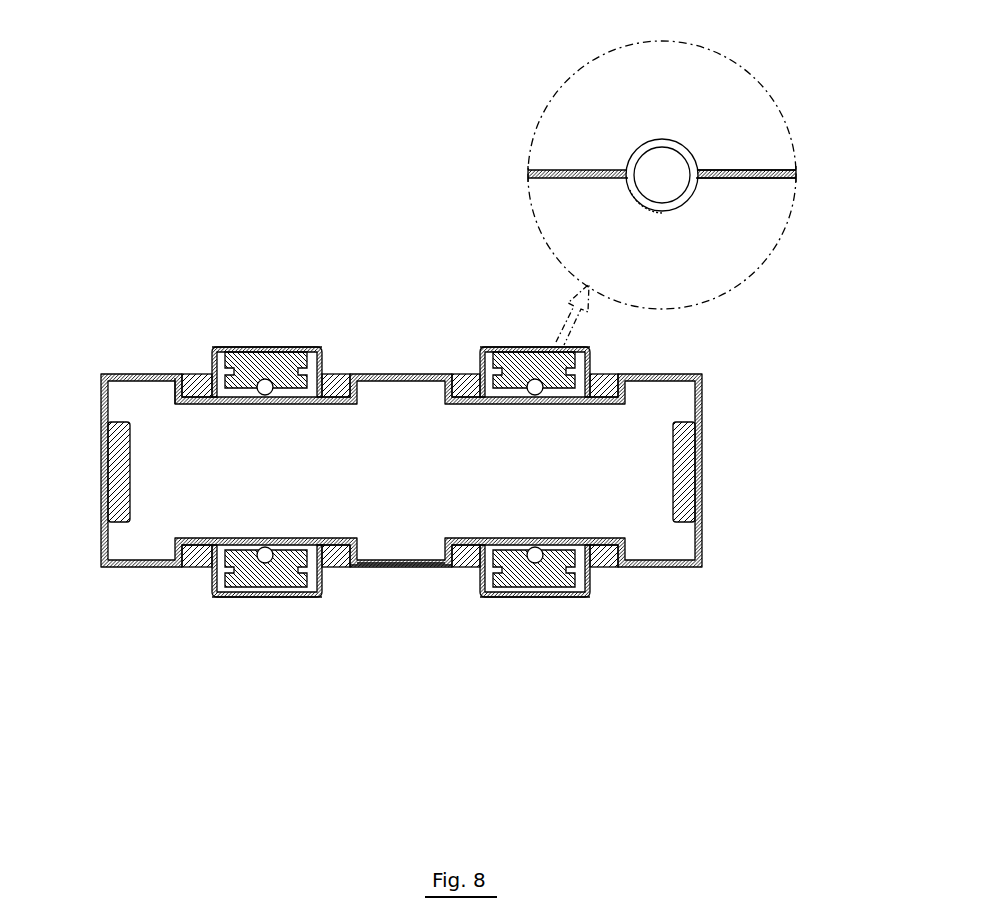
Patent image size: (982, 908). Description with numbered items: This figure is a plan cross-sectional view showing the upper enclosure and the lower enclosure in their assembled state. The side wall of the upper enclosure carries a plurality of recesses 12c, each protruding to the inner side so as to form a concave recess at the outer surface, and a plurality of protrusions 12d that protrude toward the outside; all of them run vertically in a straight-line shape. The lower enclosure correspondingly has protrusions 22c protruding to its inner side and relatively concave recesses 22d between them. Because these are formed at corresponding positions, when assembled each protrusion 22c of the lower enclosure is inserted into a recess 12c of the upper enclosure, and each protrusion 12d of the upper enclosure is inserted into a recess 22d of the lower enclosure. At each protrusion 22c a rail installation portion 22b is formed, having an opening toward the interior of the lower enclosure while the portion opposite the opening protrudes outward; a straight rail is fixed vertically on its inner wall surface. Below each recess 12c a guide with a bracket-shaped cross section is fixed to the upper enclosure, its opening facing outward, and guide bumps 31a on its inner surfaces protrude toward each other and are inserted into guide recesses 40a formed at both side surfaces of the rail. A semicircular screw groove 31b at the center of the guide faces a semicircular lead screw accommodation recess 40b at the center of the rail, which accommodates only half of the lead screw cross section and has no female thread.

The recess 12c is at (190, 403).
The protrusion 12d is at (383, 553).
The rail installation portion 22b is at (223, 348).
The protrusion 22c is at (200, 369).
The recess 22d is at (407, 566).
The guide bump 31a is at (320, 362).
The screw groove 31b is at (662, 212).
The guide recess 40a is at (300, 370).
The lead screw accommodation recess 40b is at (663, 139).